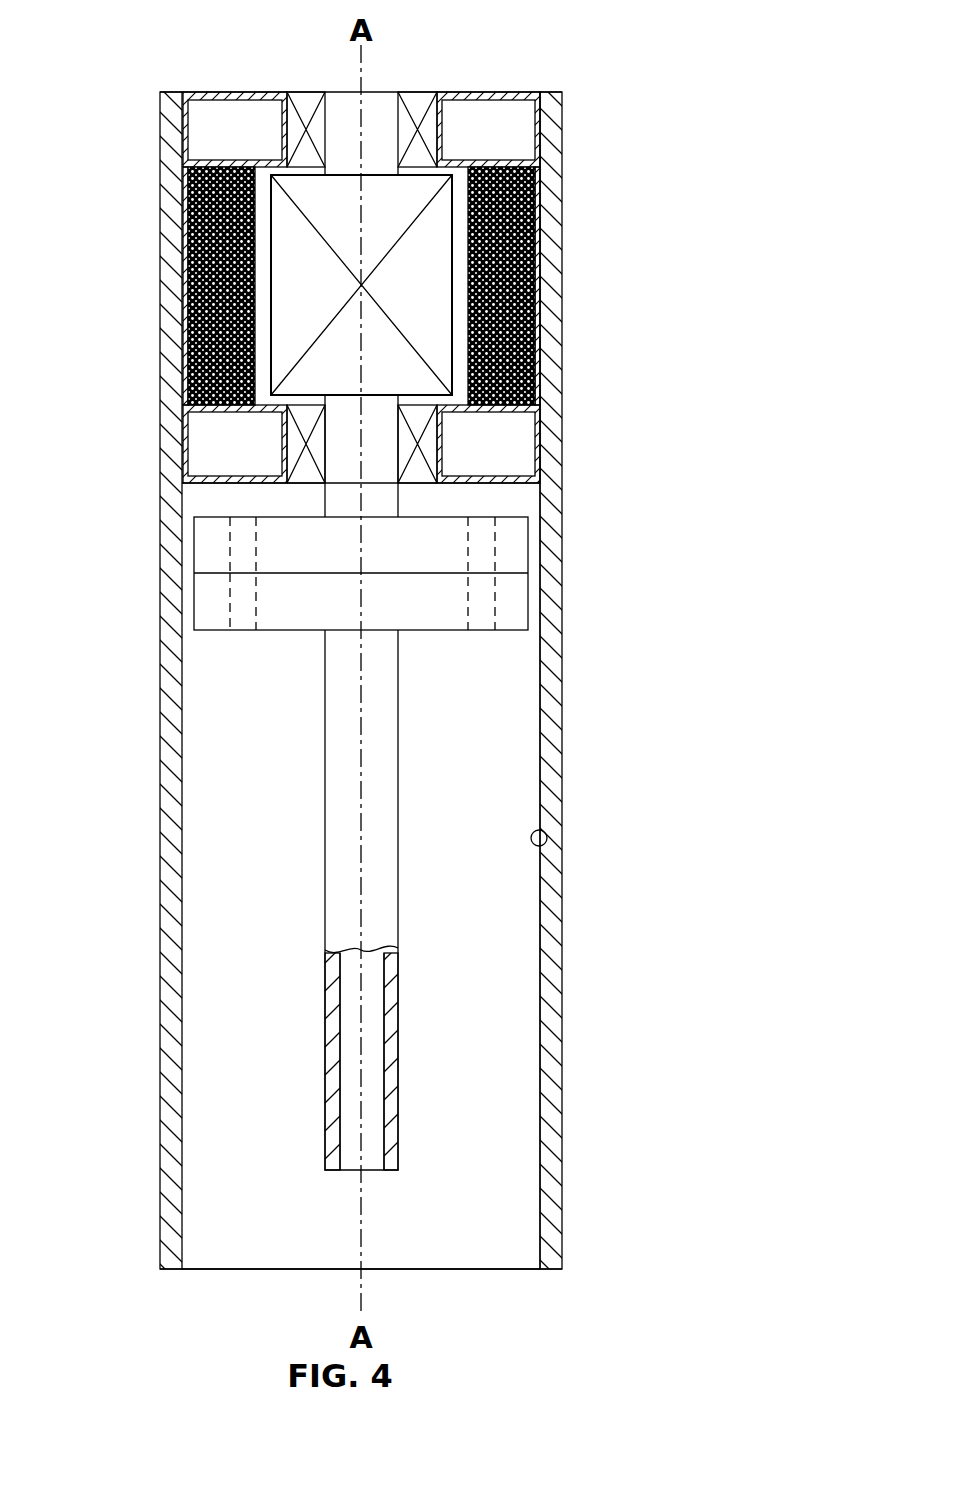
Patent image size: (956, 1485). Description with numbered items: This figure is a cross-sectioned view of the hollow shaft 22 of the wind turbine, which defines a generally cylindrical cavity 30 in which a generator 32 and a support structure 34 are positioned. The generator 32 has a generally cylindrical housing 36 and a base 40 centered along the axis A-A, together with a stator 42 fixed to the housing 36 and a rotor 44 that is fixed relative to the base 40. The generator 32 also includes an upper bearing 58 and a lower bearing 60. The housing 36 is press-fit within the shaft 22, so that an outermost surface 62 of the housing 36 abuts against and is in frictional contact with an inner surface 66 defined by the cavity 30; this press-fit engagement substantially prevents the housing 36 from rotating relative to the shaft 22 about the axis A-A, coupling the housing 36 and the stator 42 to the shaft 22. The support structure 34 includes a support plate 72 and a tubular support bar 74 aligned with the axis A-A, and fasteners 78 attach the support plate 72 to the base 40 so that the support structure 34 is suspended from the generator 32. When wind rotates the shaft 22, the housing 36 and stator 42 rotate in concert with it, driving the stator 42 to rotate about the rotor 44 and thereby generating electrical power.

The shaft 22 is at (556, 902).
The cavity 30 is at (507, 1250).
The generator 32 is at (570, 139).
The support structure 34 is at (319, 756).
The housing 36 is at (493, 92).
The base 40 is at (270, 550).
The stator 42 is at (537, 197).
The rotor 44 is at (440, 343).
The upper bearing 58 is at (407, 98).
The lower bearing 60 is at (417, 443).
The outermost surface 62 is at (542, 260).
The inner surface 66 is at (546, 836).
The support plate 72 is at (530, 620).
The support bar 74 is at (400, 803).
The fasteners 78 is at (228, 610).